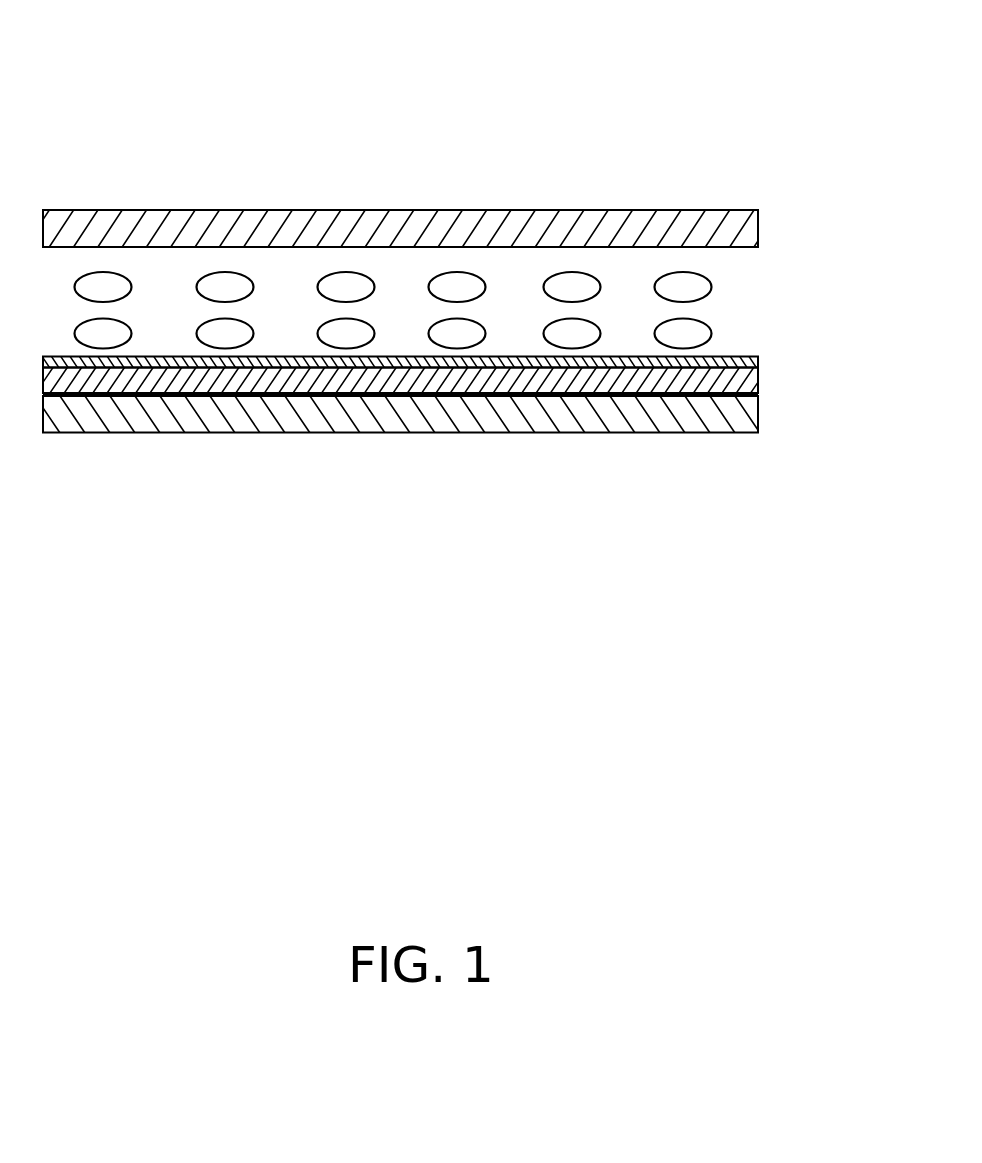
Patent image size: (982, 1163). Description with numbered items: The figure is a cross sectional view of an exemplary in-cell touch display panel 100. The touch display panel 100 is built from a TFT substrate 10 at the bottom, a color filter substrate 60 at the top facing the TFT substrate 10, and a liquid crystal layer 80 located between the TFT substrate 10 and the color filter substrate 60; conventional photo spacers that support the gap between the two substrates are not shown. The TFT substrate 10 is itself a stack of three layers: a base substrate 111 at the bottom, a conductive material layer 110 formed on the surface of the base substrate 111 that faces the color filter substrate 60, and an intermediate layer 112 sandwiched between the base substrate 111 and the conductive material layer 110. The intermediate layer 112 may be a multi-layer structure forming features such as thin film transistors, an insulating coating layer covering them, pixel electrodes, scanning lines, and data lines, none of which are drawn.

The touch display panel 100 is at (270, 72).
The color filter substrate 60 is at (720, 230).
The liquid crystal layer 80 is at (703, 311).
The TFT substrate 10 is at (858, 322).
The conductive material layer 110 is at (757, 358).
The intermediate layer 112 is at (747, 383).
The base substrate 111 is at (747, 415).